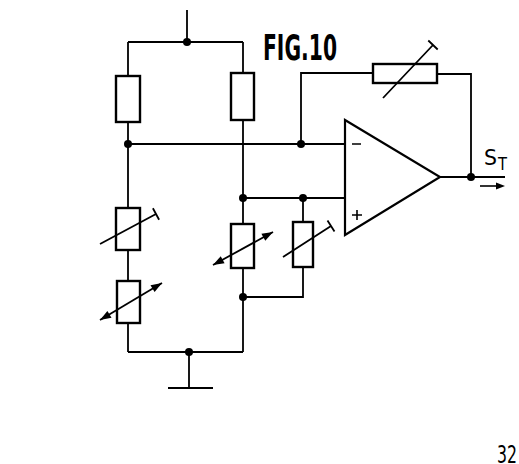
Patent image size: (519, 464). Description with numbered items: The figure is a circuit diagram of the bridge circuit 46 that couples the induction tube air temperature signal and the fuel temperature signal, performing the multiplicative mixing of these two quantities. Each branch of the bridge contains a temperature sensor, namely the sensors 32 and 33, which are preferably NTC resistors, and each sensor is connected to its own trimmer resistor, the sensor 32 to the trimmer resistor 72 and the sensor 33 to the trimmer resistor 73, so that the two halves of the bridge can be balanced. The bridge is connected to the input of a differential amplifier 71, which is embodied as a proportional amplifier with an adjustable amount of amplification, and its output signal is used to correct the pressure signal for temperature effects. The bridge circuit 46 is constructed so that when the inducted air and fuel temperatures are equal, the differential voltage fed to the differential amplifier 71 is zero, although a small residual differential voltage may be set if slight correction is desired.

The differential amplifier 71 is at (395, 200).
The trimmer resistor 72 is at (131, 218).
The temperature sensor 32 is at (133, 308).
The temperature sensor 33 is at (235, 237).
The trimmer resistor 73 is at (305, 257).
The bridge circuit 46 is at (76, 379).